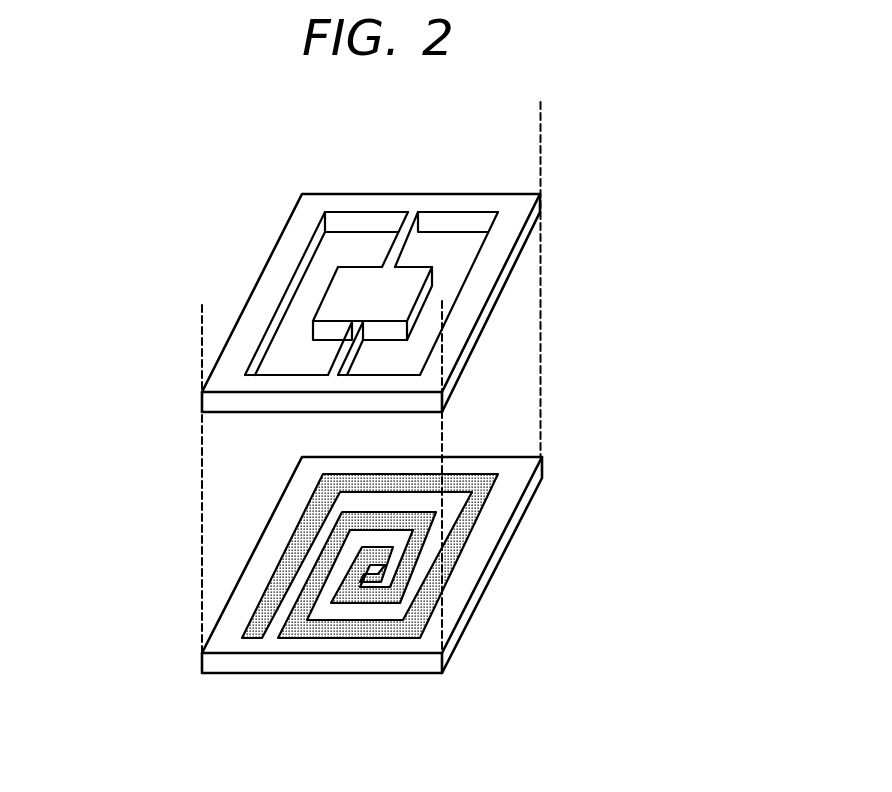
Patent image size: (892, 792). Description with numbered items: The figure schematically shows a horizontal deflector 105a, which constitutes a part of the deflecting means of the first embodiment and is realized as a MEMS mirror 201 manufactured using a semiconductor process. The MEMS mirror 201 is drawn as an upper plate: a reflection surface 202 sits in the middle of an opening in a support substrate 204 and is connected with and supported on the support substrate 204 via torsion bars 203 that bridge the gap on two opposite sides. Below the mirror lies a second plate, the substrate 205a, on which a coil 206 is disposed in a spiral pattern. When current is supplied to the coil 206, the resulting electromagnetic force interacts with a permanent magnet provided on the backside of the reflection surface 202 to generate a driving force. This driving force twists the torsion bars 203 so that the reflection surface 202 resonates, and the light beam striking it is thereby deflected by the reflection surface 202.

The horizontal deflector 105a is at (418, 178).
The MEMS mirror 201 is at (293, 200).
The reflection surface 202 is at (371, 283).
The torsion bars 203 is at (414, 244).
The support substrate 204 is at (238, 358).
The substrate 205a is at (477, 545).
The coil 206 is at (485, 475).